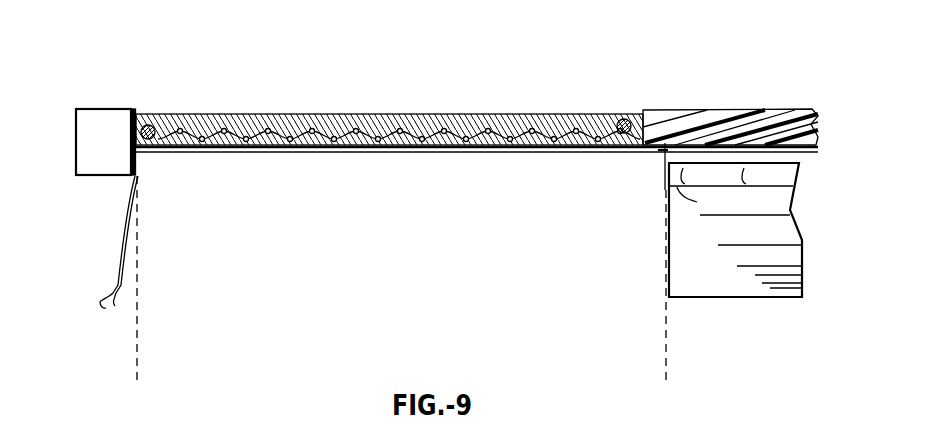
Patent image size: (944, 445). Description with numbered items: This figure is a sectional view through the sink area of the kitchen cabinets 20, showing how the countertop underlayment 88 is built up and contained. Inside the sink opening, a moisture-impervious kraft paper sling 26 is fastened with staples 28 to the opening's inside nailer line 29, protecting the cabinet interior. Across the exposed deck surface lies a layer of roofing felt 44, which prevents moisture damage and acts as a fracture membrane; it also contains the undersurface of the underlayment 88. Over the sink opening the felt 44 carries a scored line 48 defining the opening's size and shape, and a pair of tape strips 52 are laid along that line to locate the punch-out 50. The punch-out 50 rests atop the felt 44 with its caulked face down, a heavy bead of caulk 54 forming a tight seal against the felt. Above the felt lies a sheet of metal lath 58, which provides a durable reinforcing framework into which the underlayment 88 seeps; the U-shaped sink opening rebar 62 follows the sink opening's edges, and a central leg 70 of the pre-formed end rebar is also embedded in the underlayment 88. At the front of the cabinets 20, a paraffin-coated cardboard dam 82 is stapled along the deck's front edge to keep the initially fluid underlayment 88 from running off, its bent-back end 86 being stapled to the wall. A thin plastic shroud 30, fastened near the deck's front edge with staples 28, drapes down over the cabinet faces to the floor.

The kitchen cabinets 20 is at (137, 366).
The paper sling 26 is at (803, 250).
The staples 28 is at (783, 173).
The nailer line 29 is at (800, 172).
The plastic shroud 30 is at (152, 151).
The roofing felt 44 is at (310, 152).
The scored line 48 is at (660, 149).
The punch-out 50 is at (765, 110).
The tape strips 52 is at (650, 150).
The bead of caulk 54 is at (670, 147).
The metal lath 58 is at (254, 128).
The sink opening rebar 62 is at (624, 118).
The central leg 70 is at (150, 124).
The dam 82 is at (130, 118).
The bent-back end 86 is at (76, 150).
The underlayment 88 is at (574, 113).